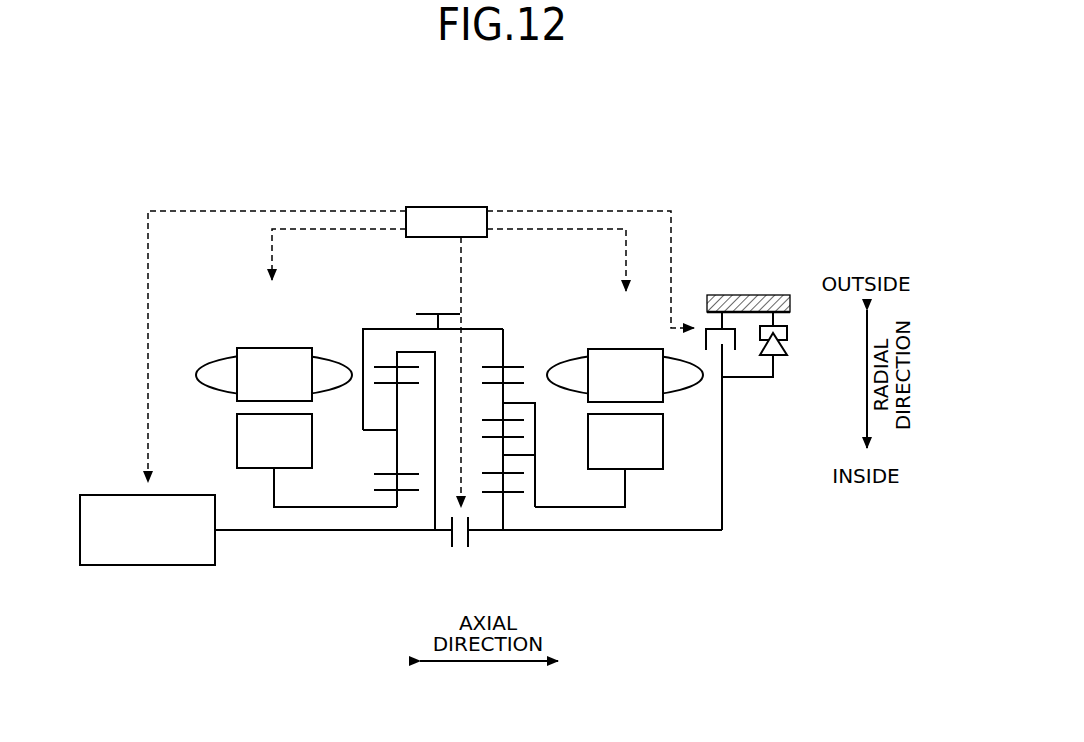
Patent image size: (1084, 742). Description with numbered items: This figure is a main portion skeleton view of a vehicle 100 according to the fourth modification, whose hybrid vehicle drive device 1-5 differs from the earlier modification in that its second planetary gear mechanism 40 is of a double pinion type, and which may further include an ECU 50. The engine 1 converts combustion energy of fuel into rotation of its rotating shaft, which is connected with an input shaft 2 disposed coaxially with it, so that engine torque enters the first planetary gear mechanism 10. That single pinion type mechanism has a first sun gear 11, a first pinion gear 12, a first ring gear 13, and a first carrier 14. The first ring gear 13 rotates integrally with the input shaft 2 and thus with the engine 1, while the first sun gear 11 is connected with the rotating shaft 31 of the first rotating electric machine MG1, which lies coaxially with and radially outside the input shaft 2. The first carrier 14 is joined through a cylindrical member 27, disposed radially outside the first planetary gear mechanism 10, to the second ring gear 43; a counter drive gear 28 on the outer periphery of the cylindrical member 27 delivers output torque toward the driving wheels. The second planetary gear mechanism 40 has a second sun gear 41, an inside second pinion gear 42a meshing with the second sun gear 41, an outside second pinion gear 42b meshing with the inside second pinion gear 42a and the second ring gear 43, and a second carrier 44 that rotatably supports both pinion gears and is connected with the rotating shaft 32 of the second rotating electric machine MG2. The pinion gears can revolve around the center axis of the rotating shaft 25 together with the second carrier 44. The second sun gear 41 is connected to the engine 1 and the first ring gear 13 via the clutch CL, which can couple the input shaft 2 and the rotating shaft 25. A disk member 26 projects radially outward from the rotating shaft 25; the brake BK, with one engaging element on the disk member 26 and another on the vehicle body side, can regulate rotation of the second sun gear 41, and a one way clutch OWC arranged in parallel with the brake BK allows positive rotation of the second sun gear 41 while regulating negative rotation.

The vehicle 100 is at (254, 137).
The hybrid vehicle drive device 1-5 is at (384, 172).
The ECU 50 is at (462, 207).
The engine 1 is at (175, 495).
The input shaft 2 is at (249, 531).
The first rotating electric machine MG1 is at (273, 348).
The second rotating electric machine MG2 is at (623, 349).
The rotating shaft 31 is at (296, 508).
The rotating shaft 32 is at (593, 508).
The cylindrical member 27 is at (372, 329).
The counter drive gear 28 is at (428, 314).
The first planetary gear mechanism 10 is at (398, 340).
The first ring gear 13 is at (376, 367).
The first carrier 14 is at (368, 430).
The first pinion gear 12 is at (376, 474).
The first sun gear 11 is at (376, 490).
The second planetary gear mechanism 40 is at (494, 340).
The second ring gear 43 is at (511, 366).
The outside second pinion gear 42b is at (513, 420).
The second carrier 44 is at (536, 447).
The inside second pinion gear 42a is at (507, 474).
The second sun gear 41 is at (474, 487).
The clutch CL is at (440, 543).
The rotating shaft 25 is at (653, 530).
The disk member 26 is at (723, 430).
The brake BK is at (704, 318).
The one way clutch OWC is at (797, 341).